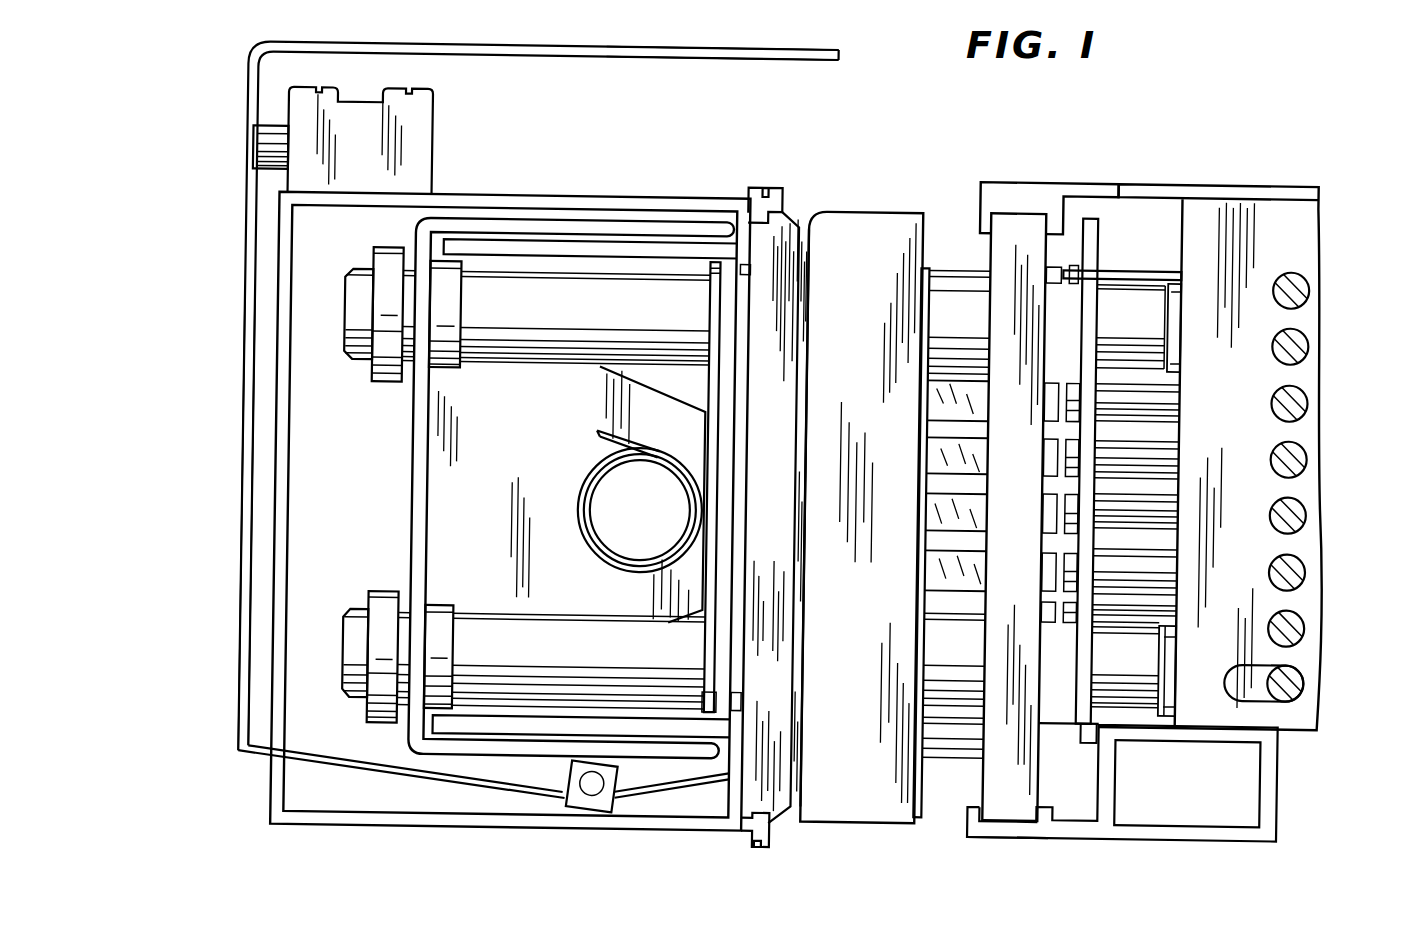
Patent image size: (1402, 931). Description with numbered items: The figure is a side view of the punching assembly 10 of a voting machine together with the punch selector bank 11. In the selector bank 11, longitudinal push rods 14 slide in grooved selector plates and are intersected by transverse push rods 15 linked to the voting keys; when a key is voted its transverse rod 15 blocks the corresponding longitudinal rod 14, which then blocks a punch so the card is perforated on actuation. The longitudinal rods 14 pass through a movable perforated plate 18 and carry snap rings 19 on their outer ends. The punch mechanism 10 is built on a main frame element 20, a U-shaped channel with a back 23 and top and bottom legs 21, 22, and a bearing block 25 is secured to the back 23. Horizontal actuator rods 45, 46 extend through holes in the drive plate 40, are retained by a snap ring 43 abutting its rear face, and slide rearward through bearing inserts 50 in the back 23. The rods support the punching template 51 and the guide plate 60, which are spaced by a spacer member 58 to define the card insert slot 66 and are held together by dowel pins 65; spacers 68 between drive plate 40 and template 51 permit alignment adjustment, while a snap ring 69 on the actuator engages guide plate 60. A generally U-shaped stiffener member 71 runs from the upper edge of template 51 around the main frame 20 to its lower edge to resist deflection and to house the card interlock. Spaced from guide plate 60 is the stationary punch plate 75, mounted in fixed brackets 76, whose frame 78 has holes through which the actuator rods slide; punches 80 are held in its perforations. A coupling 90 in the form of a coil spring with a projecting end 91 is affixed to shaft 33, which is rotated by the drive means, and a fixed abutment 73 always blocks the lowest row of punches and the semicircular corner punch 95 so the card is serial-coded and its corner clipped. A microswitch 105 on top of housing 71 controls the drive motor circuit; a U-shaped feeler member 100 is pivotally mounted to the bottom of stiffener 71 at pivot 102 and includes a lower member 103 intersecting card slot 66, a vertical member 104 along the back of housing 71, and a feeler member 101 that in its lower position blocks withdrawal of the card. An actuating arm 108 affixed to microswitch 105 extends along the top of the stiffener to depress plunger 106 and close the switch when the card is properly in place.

The punching assembly 10 is at (686, 157).
The punch selector bank 11 is at (1191, 176).
The longitudinal push rods 14 is at (1119, 265).
The transverse push rods 15 is at (1296, 282).
The movable perforated plate 18 is at (1086, 228).
The snap rings 19 is at (1071, 262).
The main frame element 20 is at (412, 439).
The top leg 21 is at (561, 224).
The bottom leg 22 is at (555, 754).
The back 23 is at (412, 494).
The bearing block 25 is at (611, 429).
The shaft 33 is at (656, 518).
The drive plate 40 is at (714, 705).
The snap ring 43 is at (707, 298).
The actuator rod 45 is at (533, 344).
The actuator rod 46 is at (532, 644).
The bearing inserts 50 is at (383, 252).
The punching template 51 is at (772, 239).
The spacer member 58 is at (804, 772).
The guide plate 60 is at (848, 233).
The dowel pins 65 is at (803, 494).
The card insert slot 66 is at (803, 227).
The spacers 68 is at (739, 249).
The snap ring 69 is at (924, 287).
The stiffener member 71 is at (479, 197).
The fixed abutment 73 is at (1103, 757).
The punch plate 75 is at (1004, 233).
The fixed brackets 76 is at (1021, 179).
The frame 78 is at (981, 782).
The punches 80 is at (935, 509).
The coupling 90 is at (590, 478).
The end 91 is at (592, 441).
The semicircular punch 95 is at (948, 740).
The feeler member 100 is at (252, 49).
The feeler member 101 is at (718, 49).
The pivot 102 is at (597, 812).
The lower member 103 is at (385, 772).
The vertical member 104 is at (246, 534).
The microswitch 105 is at (408, 143).
The plunger 106 is at (265, 129).
The actuating arm 108 is at (250, 148).